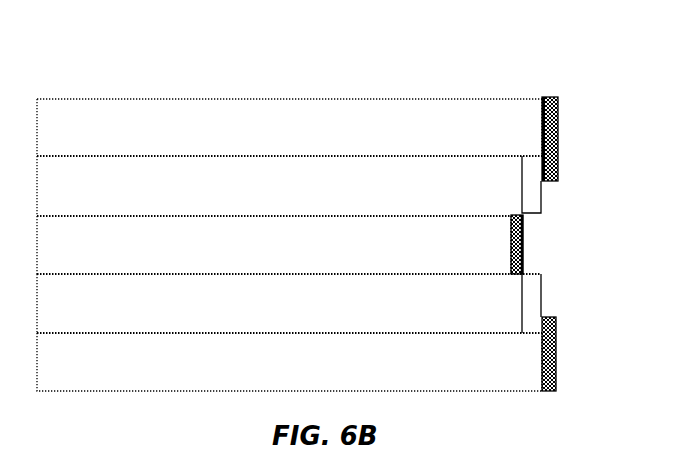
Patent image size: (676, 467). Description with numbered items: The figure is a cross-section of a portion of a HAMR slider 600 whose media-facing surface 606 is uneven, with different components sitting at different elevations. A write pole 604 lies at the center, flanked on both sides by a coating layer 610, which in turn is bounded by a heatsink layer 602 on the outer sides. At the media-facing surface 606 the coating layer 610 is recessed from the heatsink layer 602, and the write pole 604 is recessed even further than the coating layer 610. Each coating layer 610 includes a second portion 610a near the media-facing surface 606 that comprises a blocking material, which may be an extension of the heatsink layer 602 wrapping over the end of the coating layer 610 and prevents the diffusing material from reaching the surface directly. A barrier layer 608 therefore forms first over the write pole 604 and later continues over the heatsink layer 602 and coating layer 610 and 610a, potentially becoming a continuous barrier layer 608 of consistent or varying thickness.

The HAMR slider 600 is at (501, 51).
The heatsink layer 602 is at (289, 245).
The write pole 604 is at (274, 245).
The media-facing surface 606 is at (560, 104).
The barrier layer 608 is at (559, 143).
The coating layer 610 is at (289, 244).
The second portion 610a is at (535, 190).